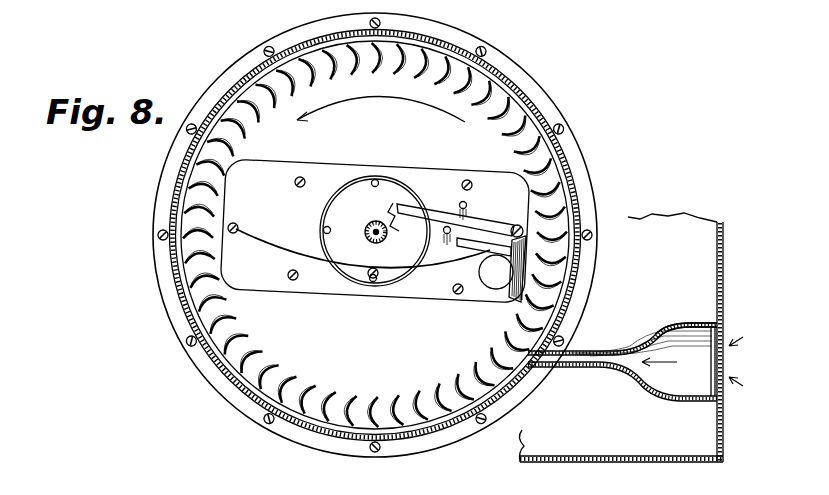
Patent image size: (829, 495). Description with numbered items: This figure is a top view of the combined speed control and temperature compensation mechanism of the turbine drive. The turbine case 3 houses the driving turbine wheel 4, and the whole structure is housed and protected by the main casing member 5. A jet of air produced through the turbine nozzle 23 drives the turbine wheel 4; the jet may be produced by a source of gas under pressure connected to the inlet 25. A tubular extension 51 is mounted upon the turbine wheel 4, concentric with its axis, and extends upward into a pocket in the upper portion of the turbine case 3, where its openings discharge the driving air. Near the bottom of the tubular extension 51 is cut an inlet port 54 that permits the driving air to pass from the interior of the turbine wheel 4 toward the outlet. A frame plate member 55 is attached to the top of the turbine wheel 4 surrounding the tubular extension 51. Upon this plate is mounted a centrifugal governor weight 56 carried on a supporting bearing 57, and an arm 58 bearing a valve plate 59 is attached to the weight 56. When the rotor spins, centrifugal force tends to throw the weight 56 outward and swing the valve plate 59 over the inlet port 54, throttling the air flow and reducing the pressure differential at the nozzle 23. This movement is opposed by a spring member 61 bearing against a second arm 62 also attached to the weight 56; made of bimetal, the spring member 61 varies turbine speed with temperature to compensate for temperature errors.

The turbine case 3 is at (523, 91).
The turbine wheel 4 is at (537, 152).
The main casing member 5 is at (636, 462).
The turbine nozzle 23 is at (592, 367).
The inlet 25 is at (680, 321).
The tubular extension 51 is at (366, 231).
The inlet port 54 is at (389, 229).
The frame plate member 55 is at (330, 299).
The centrifugal governor weight 56 is at (497, 279).
The supporting bearing 57 is at (513, 226).
The arm 58 is at (463, 188).
The valve plate 59 is at (396, 207).
The spring member 61 is at (262, 240).
The arm 62 is at (488, 252).